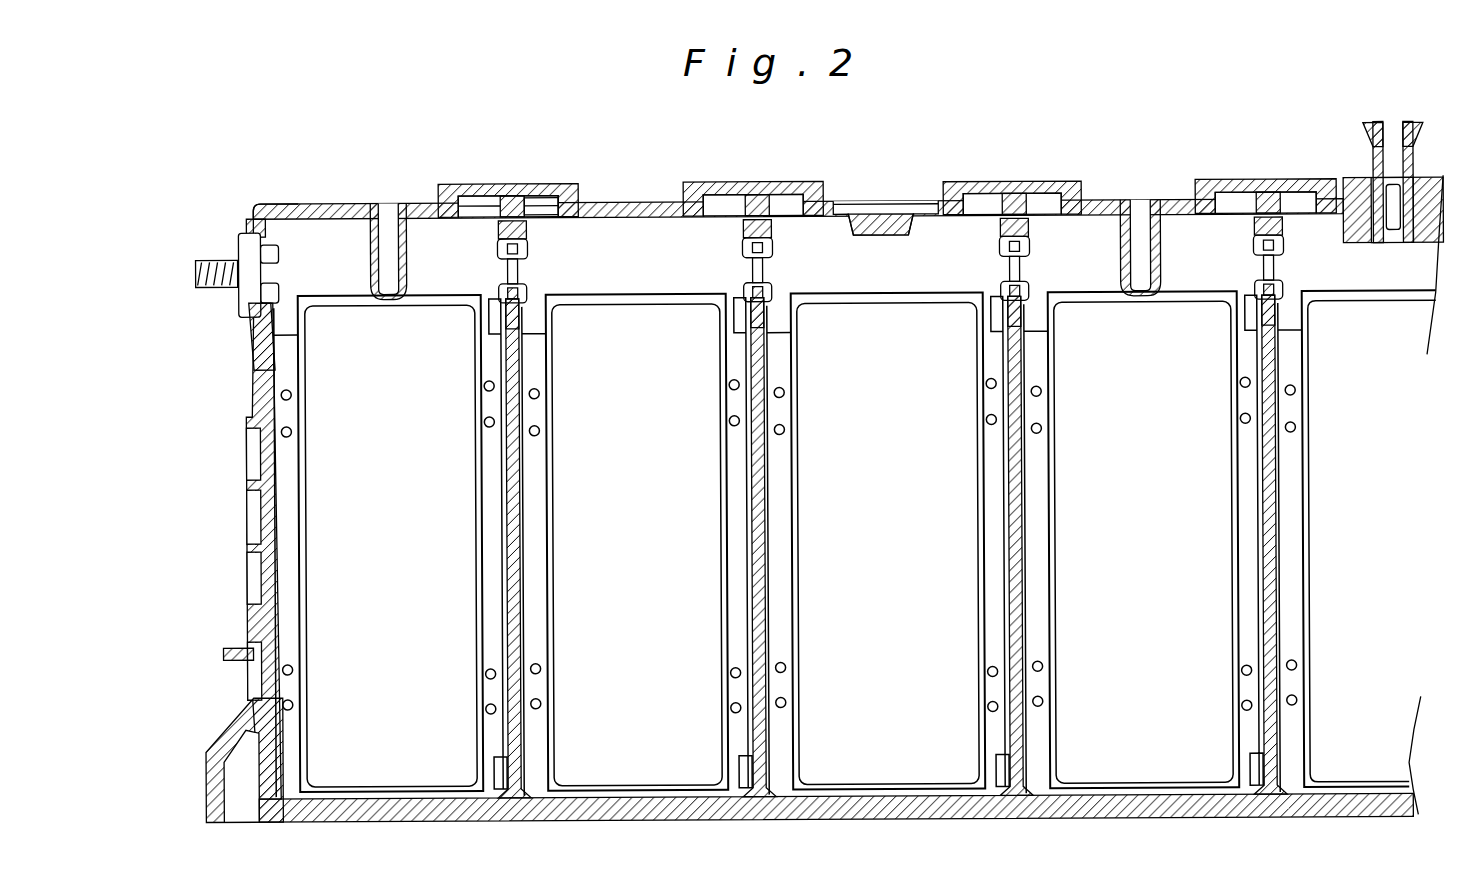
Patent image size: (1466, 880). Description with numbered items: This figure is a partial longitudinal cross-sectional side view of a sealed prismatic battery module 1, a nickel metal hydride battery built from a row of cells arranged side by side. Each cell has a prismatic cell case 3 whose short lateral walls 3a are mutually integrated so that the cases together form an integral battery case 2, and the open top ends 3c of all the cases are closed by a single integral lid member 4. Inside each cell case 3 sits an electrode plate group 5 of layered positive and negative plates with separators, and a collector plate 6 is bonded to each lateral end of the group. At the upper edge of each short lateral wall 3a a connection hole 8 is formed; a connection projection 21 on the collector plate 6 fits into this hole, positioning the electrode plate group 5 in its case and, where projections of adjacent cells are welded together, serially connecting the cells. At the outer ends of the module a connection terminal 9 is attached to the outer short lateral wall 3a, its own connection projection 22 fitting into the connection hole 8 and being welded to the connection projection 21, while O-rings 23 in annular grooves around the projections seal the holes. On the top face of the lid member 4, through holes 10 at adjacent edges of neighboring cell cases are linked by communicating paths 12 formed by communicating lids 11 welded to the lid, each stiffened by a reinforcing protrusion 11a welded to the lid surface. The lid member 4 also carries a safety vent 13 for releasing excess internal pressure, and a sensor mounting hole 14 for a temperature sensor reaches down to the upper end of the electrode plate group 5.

The battery module 1 is at (272, 190).
The integral battery case 2 is at (245, 515).
The cell case 3 is at (292, 800).
The short lateral wall 3a is at (265, 360).
The open top end 3c is at (487, 300).
The lid member 4 is at (312, 205).
The electrode plate group 5 is at (393, 574).
The collector plate 6 is at (250, 580).
The connection hole 8 is at (255, 305).
The connection terminal 9 is at (210, 258).
The through hole 10 is at (480, 216).
The communicating lid 11 is at (470, 197).
The reinforcing protrusion 11a is at (508, 207).
The communicating path 12 is at (540, 205).
The safety vent 13 is at (1393, 220).
The sensor mounting hole 14 is at (388, 216).
The connection projection 21 is at (288, 272).
The connection projection 22 is at (240, 283).
The O-ring 23 is at (265, 330).